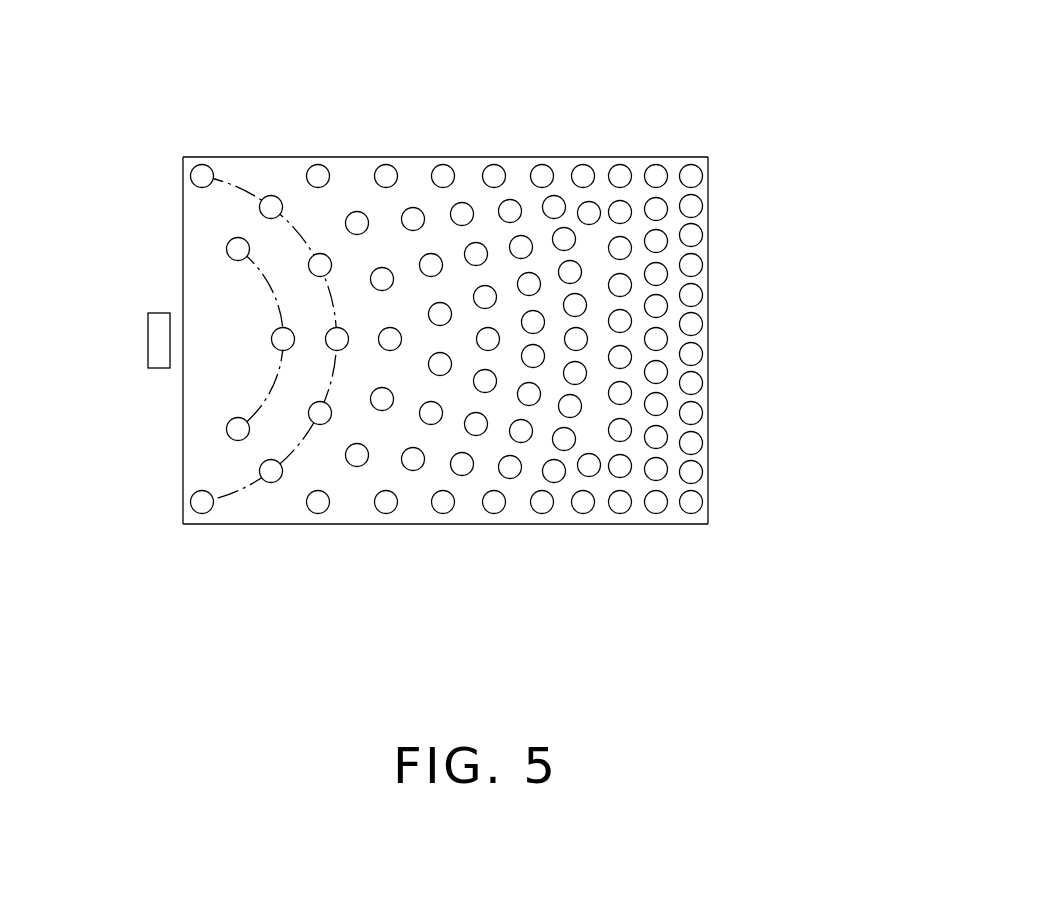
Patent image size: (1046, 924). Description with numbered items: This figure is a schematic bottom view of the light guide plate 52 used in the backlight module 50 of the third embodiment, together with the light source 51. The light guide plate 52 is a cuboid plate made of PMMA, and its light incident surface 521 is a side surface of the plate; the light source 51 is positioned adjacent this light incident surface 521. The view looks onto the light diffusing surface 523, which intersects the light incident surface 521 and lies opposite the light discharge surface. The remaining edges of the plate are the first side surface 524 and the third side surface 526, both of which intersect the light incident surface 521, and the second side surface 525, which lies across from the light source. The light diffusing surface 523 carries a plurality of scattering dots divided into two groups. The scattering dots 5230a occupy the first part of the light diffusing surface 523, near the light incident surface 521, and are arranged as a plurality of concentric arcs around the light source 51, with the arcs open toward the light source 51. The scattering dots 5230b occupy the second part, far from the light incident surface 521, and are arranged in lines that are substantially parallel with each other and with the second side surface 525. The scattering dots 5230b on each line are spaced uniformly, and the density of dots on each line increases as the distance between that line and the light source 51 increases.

The backlight module 50 is at (480, 68).
The light source 51 is at (158, 337).
The light guide plate 52 is at (727, 210).
The light incident surface 521 is at (183, 262).
The light diffusing surface 523 is at (494, 286).
The first side surface 524 is at (595, 525).
The second side surface 525 is at (710, 283).
The third side surface 526 is at (598, 157).
The scattering dots 5230a is at (202, 175).
The scattering dots 5230b is at (691, 176).